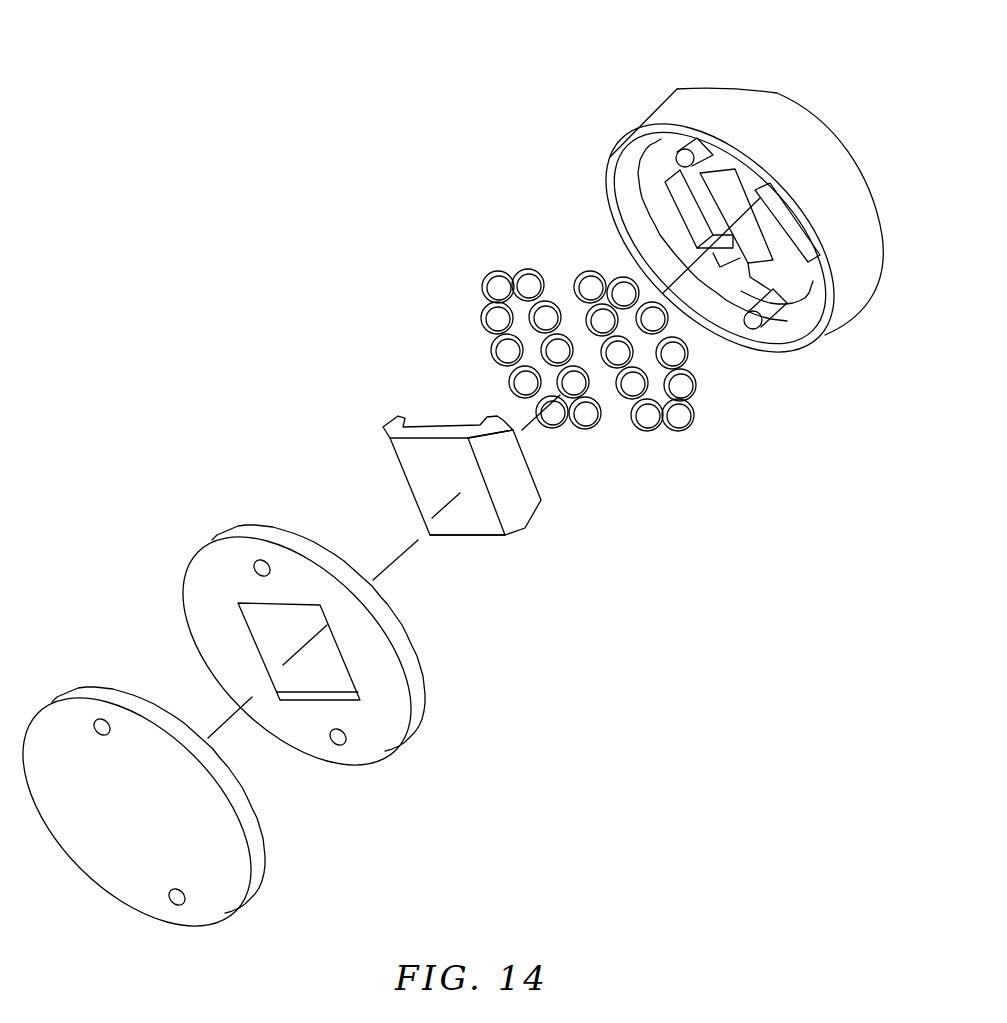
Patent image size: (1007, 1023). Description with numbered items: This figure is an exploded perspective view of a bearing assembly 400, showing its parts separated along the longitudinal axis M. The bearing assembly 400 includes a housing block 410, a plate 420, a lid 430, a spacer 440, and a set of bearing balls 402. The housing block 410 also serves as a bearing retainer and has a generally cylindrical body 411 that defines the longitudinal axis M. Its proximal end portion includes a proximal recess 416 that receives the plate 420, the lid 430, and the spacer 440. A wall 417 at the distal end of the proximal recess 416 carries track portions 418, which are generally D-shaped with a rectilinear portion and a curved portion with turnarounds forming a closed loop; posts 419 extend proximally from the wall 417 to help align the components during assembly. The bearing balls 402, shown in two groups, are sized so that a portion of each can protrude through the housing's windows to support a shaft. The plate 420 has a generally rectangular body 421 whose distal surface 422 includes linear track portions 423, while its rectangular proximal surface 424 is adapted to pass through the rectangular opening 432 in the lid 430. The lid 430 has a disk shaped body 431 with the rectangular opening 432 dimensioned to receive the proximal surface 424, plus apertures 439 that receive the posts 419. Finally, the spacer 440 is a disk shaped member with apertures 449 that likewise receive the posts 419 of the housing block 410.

The bearing assembly 400 is at (226, 328).
The housing block 410 is at (829, 97).
The generally cylindrical body 411 is at (858, 188).
The proximal recess 416 is at (616, 178).
The wall 417 is at (800, 313).
The track portions 418 is at (647, 214).
The posts 419 is at (680, 142).
The bearing balls 402 is at (578, 271).
The plate 420 is at (372, 421).
The generally rectangular body 421 is at (413, 462).
The distal surface 422 is at (533, 466).
The linear track portions 423 is at (469, 419).
The rectangular proximal surface 424 is at (495, 524).
The lid 430 is at (236, 521).
The disk shaped body 431 is at (382, 652).
The rectangular opening 432 is at (338, 678).
The apertures 439 is at (254, 566).
The longitudinal axis M is at (400, 555).
The spacer 440 is at (82, 682).
The apertures 449 is at (104, 722).